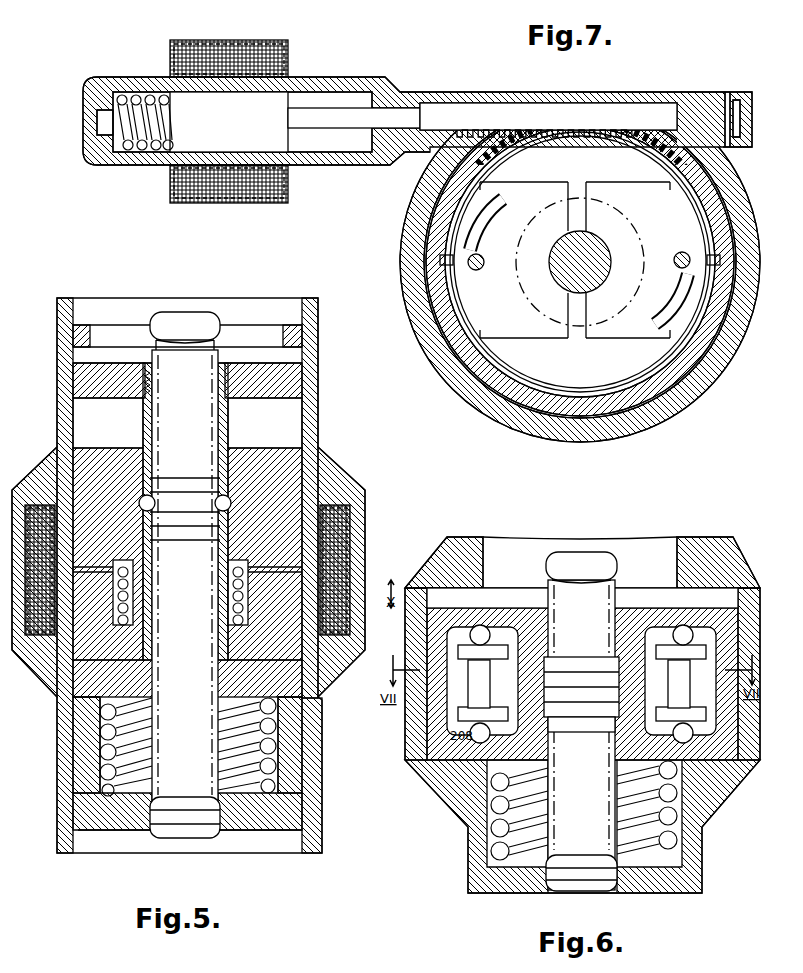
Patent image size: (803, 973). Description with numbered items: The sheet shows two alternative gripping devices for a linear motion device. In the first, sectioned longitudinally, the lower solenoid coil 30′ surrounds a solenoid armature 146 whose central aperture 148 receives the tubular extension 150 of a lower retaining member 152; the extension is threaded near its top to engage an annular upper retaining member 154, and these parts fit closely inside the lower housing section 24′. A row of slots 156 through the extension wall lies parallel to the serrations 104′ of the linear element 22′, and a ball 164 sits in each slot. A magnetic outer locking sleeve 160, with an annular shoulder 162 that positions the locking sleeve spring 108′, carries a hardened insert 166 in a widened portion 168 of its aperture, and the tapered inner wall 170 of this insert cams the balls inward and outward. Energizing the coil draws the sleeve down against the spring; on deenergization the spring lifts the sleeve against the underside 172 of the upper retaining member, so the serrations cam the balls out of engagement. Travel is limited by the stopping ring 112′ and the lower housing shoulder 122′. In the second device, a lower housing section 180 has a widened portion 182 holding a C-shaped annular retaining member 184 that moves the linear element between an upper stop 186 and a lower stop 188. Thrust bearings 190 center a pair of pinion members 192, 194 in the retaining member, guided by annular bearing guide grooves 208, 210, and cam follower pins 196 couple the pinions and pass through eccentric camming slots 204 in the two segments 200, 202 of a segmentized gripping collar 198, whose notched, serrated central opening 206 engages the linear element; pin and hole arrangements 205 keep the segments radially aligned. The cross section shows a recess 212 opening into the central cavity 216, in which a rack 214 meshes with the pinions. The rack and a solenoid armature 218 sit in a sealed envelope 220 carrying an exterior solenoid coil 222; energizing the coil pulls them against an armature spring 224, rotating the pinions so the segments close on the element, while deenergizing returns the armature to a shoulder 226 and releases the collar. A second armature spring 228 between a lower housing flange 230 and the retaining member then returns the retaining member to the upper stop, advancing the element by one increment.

In FIG. 5, the linear element 22′ is at (200, 428).
In FIG. 5, the lower housing section 24′ is at (60, 425).
In FIG. 5, the lower solenoid coil 30′ is at (350, 520).
In FIG. 5, the serrations 104′ is at (181, 490).
In FIG. 5, the locking sleeve spring 108′ is at (130, 572).
In FIG. 5, the stopping ring 112′ is at (290, 334).
In FIG. 5, the lower housing shoulder 122′ is at (316, 705).
In FIG. 5, the solenoid armature 146 is at (283, 637).
In FIG. 5, the central aperture 148 is at (236, 640).
In FIG. 5, the tubular extension 150 is at (148, 368).
In FIG. 5, the lower retaining member 152 is at (236, 677).
In FIG. 5, the upper retaining member 154 is at (288, 380).
In FIG. 5, the slots 156 is at (248, 520).
In FIG. 5, the outer locking sleeve 160 is at (92, 462).
In FIG. 5, the annular shoulder 162 is at (300, 543).
In FIG. 5, the ball 164 is at (139, 503).
In FIG. 5, the hardened insert 166 is at (240, 466).
In FIG. 5, the widened portion 168 is at (118, 470).
In FIG. 5, the tapered inner wall 170 is at (164, 532).
In FIG. 5, the underside 172 is at (103, 398).
In FIG. 6, the lower housing section 180 is at (703, 856).
In FIG. 7, the widened portion 182 is at (736, 351).
In FIG. 6, the widened portion 182 is at (762, 600).
In FIG. 7, the annular retaining member 184 is at (702, 380).
In FIG. 6, the annular retaining member 184 is at (445, 637).
In FIG. 6, the upper stop 186 is at (725, 580).
In FIG. 6, the lower stop 188 is at (720, 790).
In FIG. 6, the thrust bearings 190 is at (666, 778).
In FIG. 6, the pinion member 192 is at (505, 628).
In FIG. 6, the pinion member 194 is at (535, 728).
In FIG. 7, the cam follower pins 196 is at (478, 270).
In FIG. 6, the cam follower pins 196 is at (455, 706).
In FIG. 6, the segmentized gripping collar 198 is at (632, 678).
In FIG. 7, the gripping collar segment 200 is at (530, 338).
In FIG. 7, the gripping collar segment 202 is at (620, 196).
In FIG. 7, the camming slot 204 is at (512, 198).
In FIG. 7, the pin and hole arrangements 205 is at (444, 258).
In FIG. 6, the pin and hole arrangements 205 is at (752, 676).
In FIG. 7, the central opening 206 is at (603, 240).
In FIG. 6, the annular bearing guide groove 208 is at (685, 628).
In FIG. 6, the annular bearing guide groove 210 is at (579, 687).
In FIG. 7, the recess 212 is at (510, 96).
In FIG. 7, the rack 214 is at (552, 112).
In FIG. 7, the central cavity 216 is at (726, 172).
In FIG. 6, the central cavity 216 is at (447, 598).
In FIG. 7, the solenoid armature 218 is at (270, 139).
In FIG. 7, the sealed envelope 220 is at (386, 80).
In FIG. 7, the solenoid coil 222 is at (216, 50).
In FIG. 7, the armature spring 224 is at (140, 155).
In FIG. 7, the shoulder 226 is at (372, 98).
In FIG. 6, the armature spring 228 is at (488, 860).
In FIG. 6, the lower housing flange 230 is at (655, 885).